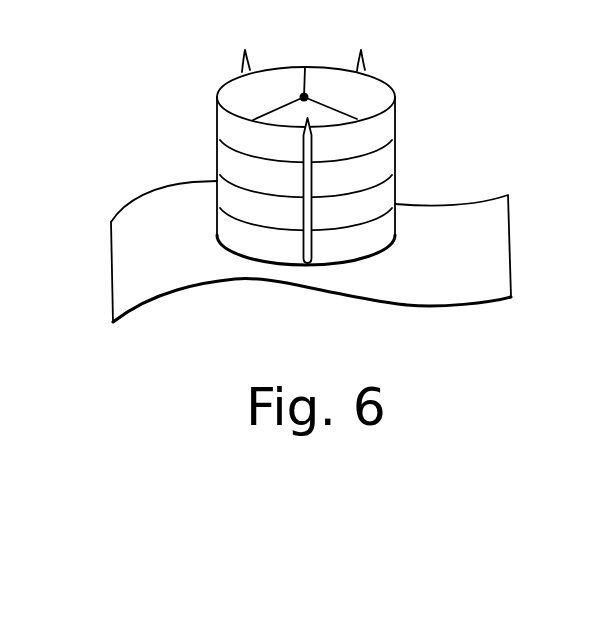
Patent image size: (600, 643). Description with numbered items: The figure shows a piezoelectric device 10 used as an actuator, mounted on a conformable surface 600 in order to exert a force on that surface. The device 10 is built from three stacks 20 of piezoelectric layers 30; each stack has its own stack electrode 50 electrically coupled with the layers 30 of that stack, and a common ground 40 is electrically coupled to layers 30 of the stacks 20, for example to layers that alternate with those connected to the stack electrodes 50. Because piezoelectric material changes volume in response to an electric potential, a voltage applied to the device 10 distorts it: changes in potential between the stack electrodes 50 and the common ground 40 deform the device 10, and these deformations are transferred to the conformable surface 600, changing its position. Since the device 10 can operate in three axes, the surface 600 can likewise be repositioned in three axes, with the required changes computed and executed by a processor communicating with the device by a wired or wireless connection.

The device 10 is at (134, 154).
The stack 20 is at (338, 73).
The piezoelectric layer 30 is at (388, 193).
The common ground 40 is at (310, 97).
The stack electrode 50 is at (362, 50).
The conformable surface 600 is at (425, 285).